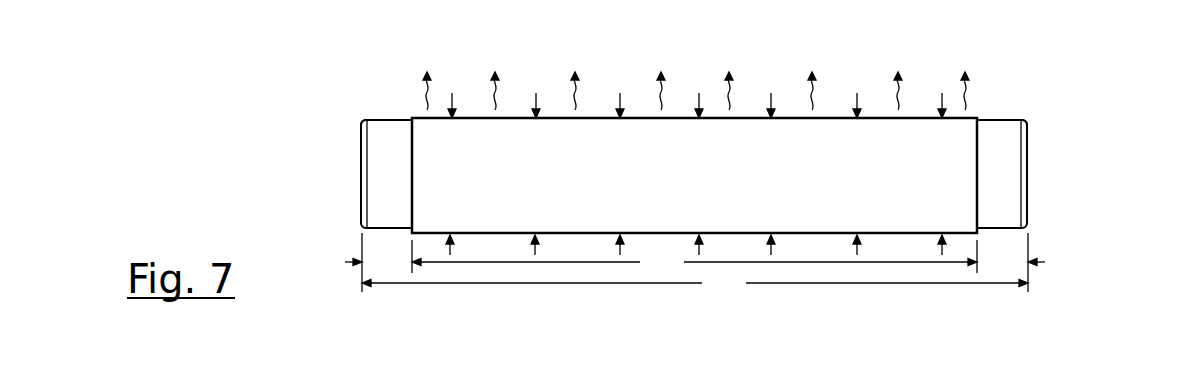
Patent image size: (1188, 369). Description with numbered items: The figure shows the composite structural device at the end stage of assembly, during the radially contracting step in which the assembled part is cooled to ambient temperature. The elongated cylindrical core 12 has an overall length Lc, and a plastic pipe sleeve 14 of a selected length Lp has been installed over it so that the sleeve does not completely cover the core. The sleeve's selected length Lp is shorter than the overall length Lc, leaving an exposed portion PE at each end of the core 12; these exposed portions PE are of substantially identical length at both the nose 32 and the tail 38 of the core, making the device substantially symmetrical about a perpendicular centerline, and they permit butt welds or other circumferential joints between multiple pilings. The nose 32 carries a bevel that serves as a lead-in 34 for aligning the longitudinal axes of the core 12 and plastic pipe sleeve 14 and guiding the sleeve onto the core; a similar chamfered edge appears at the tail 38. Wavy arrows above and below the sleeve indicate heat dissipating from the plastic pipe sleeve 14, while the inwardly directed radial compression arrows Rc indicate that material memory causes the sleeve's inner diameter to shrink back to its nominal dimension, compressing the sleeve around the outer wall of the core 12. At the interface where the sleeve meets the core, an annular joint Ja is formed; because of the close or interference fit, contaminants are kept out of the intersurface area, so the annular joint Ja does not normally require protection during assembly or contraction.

The core 12 is at (400, 186).
The plastic pipe sleeve 14 is at (700, 185).
The nose 32 is at (1030, 162).
The lead-in 34 is at (362, 122).
The tail 38 is at (362, 177).
The annular joint Ja is at (412, 118).
The radial compression arrows Rc is at (534, 110).
The selected length of the plastic pipe sleeve Lp is at (694, 256).
The overall length of the core Lc is at (695, 283).
The exposed portion PE is at (695, 262).